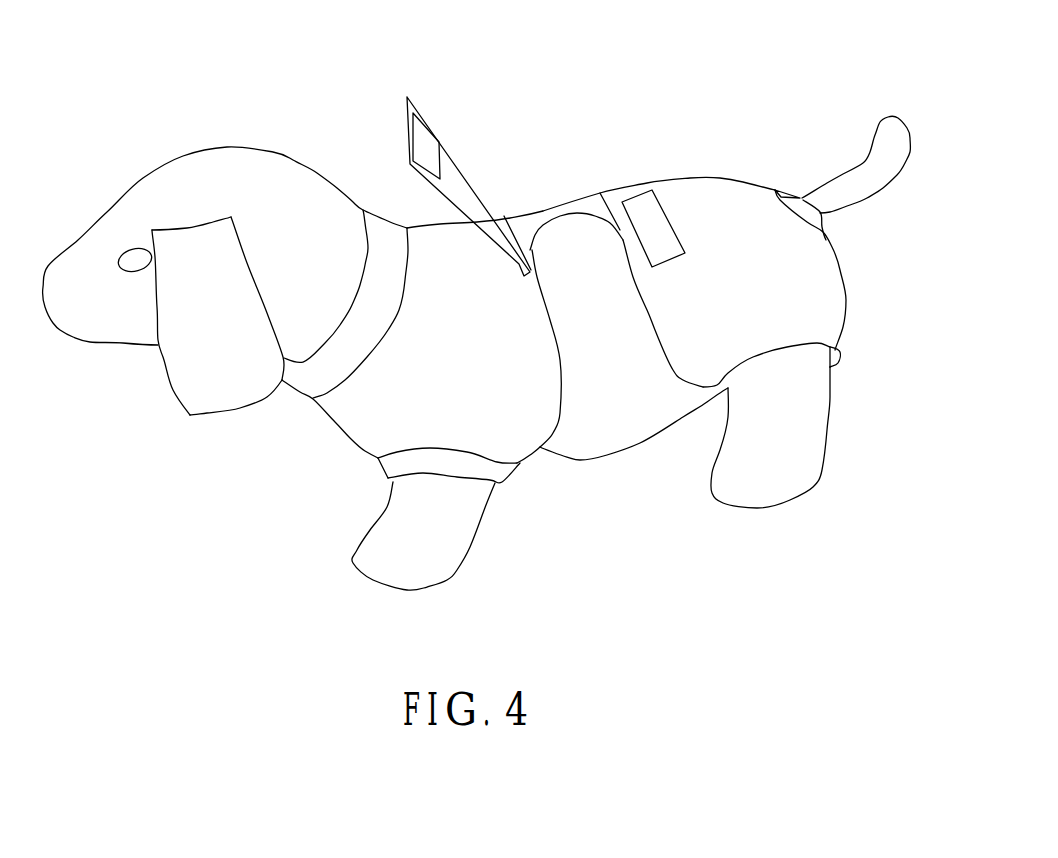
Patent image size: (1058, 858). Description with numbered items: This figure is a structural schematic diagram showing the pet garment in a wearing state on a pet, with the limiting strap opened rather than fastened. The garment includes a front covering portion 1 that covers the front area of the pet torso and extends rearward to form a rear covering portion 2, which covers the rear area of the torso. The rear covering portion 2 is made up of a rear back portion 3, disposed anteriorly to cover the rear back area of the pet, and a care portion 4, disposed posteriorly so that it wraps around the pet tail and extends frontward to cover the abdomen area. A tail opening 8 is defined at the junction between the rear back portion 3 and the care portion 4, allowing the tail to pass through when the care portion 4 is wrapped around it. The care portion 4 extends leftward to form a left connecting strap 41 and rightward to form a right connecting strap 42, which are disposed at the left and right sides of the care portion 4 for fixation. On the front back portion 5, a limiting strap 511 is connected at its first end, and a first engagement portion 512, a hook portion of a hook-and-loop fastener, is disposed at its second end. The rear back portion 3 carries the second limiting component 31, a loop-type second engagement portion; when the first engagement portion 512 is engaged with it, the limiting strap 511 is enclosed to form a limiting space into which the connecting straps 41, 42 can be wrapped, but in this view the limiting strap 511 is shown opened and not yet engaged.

The front covering portion 1 is at (327, 445).
The rear covering portion 2 is at (792, 167).
The rear back portion 3 is at (743, 220).
The second limiting component 31 is at (647, 213).
The care portion 4 is at (658, 405).
The left connecting strap 41 is at (602, 327).
The right connecting strap 42 is at (543, 213).
The front back portion 5 is at (420, 247).
The limiting strap 511 is at (469, 189).
The first engagement portion 512 is at (436, 147).
The tail opening 8 is at (808, 223).